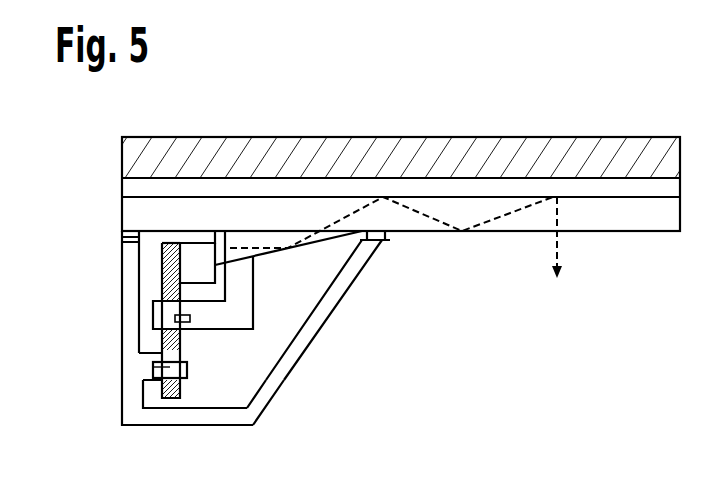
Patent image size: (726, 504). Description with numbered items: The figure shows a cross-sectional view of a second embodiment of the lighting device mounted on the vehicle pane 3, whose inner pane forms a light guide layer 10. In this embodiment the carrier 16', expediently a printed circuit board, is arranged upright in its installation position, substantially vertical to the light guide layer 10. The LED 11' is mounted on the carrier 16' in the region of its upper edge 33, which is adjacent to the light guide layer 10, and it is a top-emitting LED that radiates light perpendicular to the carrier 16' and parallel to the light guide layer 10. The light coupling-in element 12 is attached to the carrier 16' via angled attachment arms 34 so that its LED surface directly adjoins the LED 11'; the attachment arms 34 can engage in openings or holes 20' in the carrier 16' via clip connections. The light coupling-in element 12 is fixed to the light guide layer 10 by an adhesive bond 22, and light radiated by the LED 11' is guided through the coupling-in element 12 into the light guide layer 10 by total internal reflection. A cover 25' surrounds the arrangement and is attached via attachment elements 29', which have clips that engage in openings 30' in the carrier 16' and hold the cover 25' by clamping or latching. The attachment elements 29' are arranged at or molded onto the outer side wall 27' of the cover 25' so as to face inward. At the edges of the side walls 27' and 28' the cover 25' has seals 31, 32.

The vehicle pane 3 is at (628, 132).
The light guide layer 10 is at (608, 208).
The LED 11' is at (222, 173).
The light coupling-in element 12 is at (272, 238).
The carrier 16' is at (120, 321).
The openings or holes 20' is at (272, 377).
The adhesive bond 22 is at (302, 224).
The cover 25' is at (99, 312).
The outer side wall 27' is at (156, 328).
The side wall 28' is at (351, 310).
The attachment element 29' is at (304, 415).
The openings 30' is at (153, 400).
The seal 31 is at (122, 237).
The seal 32 is at (388, 237).
The upper edge 33 is at (168, 243).
The attachment arms 34 is at (242, 292).